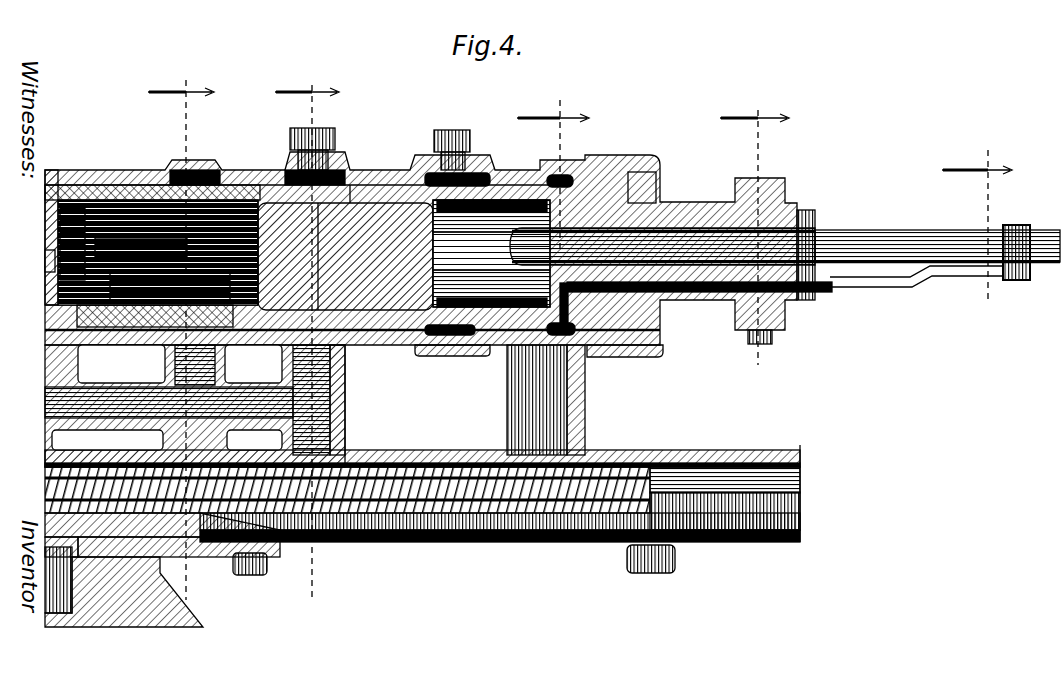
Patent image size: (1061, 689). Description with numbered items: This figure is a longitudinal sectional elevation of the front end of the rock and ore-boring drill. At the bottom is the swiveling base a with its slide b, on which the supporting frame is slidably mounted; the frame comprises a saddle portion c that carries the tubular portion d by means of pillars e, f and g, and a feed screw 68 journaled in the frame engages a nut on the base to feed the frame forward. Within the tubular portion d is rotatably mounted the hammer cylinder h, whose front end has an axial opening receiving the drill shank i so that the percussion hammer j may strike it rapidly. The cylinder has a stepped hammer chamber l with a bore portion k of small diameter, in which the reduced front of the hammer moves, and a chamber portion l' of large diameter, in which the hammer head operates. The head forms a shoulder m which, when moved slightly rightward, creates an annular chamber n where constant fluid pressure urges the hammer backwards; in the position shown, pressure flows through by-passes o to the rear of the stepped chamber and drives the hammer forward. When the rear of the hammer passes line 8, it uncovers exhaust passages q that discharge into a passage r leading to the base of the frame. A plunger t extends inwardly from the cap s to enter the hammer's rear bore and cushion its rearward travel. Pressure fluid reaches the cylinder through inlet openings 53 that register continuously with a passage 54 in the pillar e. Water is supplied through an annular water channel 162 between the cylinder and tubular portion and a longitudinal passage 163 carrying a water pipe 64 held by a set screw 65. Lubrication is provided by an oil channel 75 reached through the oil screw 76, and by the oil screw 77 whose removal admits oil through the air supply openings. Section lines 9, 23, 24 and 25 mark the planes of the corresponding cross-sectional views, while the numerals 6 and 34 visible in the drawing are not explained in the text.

The hammer cylinder h is at (510, 183).
The stepped hammer chamber l is at (151, 223).
The chamber portion of large diameter l' is at (155, 234).
The cap s is at (68, 190).
The by-passes o is at (140, 190).
The exhaust passages q is at (200, 170).
The annular chamber n is at (272, 195).
The tubular portion d is at (380, 220).
The bore portion of small diameter k is at (360, 183).
The inlet openings 53 is at (343, 160).
The oil screw 77 is at (292, 135).
The percussion hammer j is at (383, 220).
The oil screw 76 is at (463, 132).
The drill shank i is at (673, 250).
The longitudinal passage 163 is at (575, 300).
The water pipe 64 is at (912, 292).
The set screw 65 is at (748, 340).
The section line 23 is at (553, 163).
The section line 24 is at (754, 227).
The section line 25 is at (977, 214).
The line 8 is at (181, 330).
The section line 9 is at (307, 332).
The pillar e is at (345, 410).
The passage 54 is at (345, 392).
The pillar g is at (165, 362).
The plunger t is at (120, 325).
The part o 6 is at (96, 330).
The shoulder m is at (230, 308).
The passage r is at (195, 365).
The slide 34 is at (127, 413).
The oil channel 75 is at (462, 342).
The annular water channel 162 is at (540, 350).
The pillar f is at (584, 398).
The feed screw 68 is at (495, 530).
The saddle portion c is at (396, 542).
The slide b is at (215, 558).
The swiveling base a is at (157, 620).